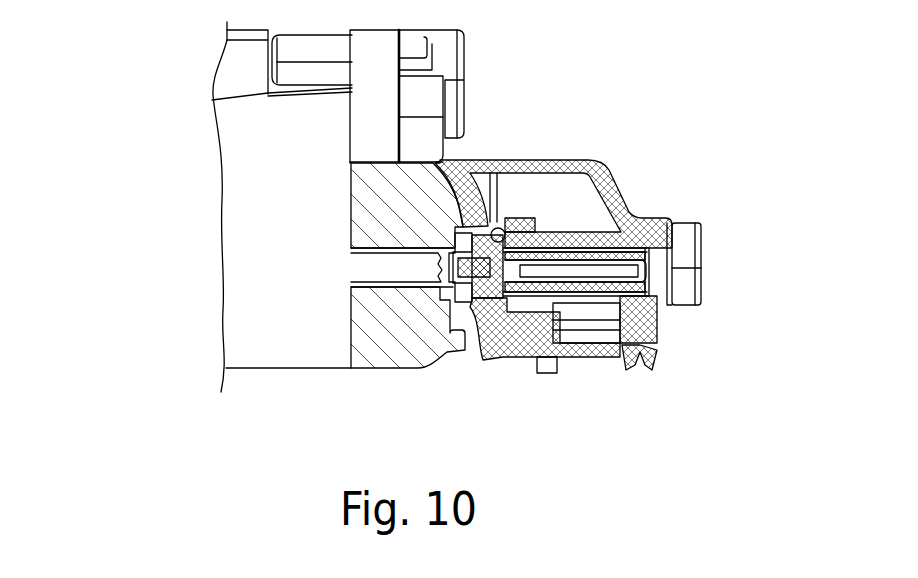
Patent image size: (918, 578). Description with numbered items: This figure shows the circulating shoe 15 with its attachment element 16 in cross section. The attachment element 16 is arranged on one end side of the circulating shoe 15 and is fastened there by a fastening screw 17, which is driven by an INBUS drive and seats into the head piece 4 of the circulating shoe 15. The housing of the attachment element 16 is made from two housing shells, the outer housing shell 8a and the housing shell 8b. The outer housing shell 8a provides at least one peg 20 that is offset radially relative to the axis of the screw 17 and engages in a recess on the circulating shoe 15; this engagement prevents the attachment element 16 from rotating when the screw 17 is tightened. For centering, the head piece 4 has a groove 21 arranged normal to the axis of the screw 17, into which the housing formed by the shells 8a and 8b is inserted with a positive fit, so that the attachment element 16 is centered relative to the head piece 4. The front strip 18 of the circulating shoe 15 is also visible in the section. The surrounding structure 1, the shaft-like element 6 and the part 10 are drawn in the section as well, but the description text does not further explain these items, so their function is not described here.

The engine block 1 is at (233, 218).
The circulating shoe 15 is at (200, 260).
The drive shaft 6 is at (375, 270).
The head piece 4 is at (375, 347).
The peg 20 is at (497, 225).
The outer housing shell 8a is at (600, 172).
The housing shell 8b is at (500, 348).
The groove 21 is at (463, 307).
The attachment element 16 is at (722, 255).
The fastening screw 17 is at (685, 243).
The front strip 18 is at (652, 350).
The sensor 10 is at (548, 357).